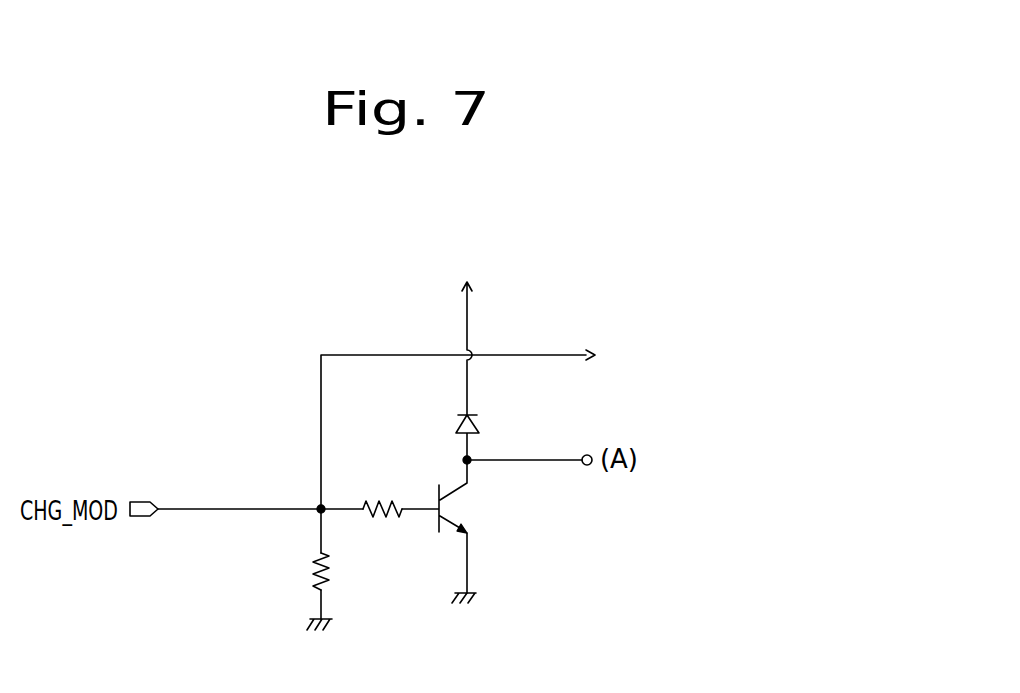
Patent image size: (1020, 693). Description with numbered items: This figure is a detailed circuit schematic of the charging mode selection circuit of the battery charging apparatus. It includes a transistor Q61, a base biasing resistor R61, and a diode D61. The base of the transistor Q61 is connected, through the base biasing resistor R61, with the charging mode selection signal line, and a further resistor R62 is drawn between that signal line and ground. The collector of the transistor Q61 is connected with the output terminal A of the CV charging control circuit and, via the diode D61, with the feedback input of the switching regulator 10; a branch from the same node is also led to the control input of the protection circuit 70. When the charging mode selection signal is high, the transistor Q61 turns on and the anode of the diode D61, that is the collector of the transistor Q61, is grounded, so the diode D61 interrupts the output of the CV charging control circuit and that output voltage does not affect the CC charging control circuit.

The base biasing resistor R61 is at (382, 489).
The resistor R62 is at (296, 571).
The transistor Q61 is at (452, 531).
The diode D61 is at (490, 434).
The switching regulator 10 is at (462, 313).
The protection circuit 70 is at (743, 368).